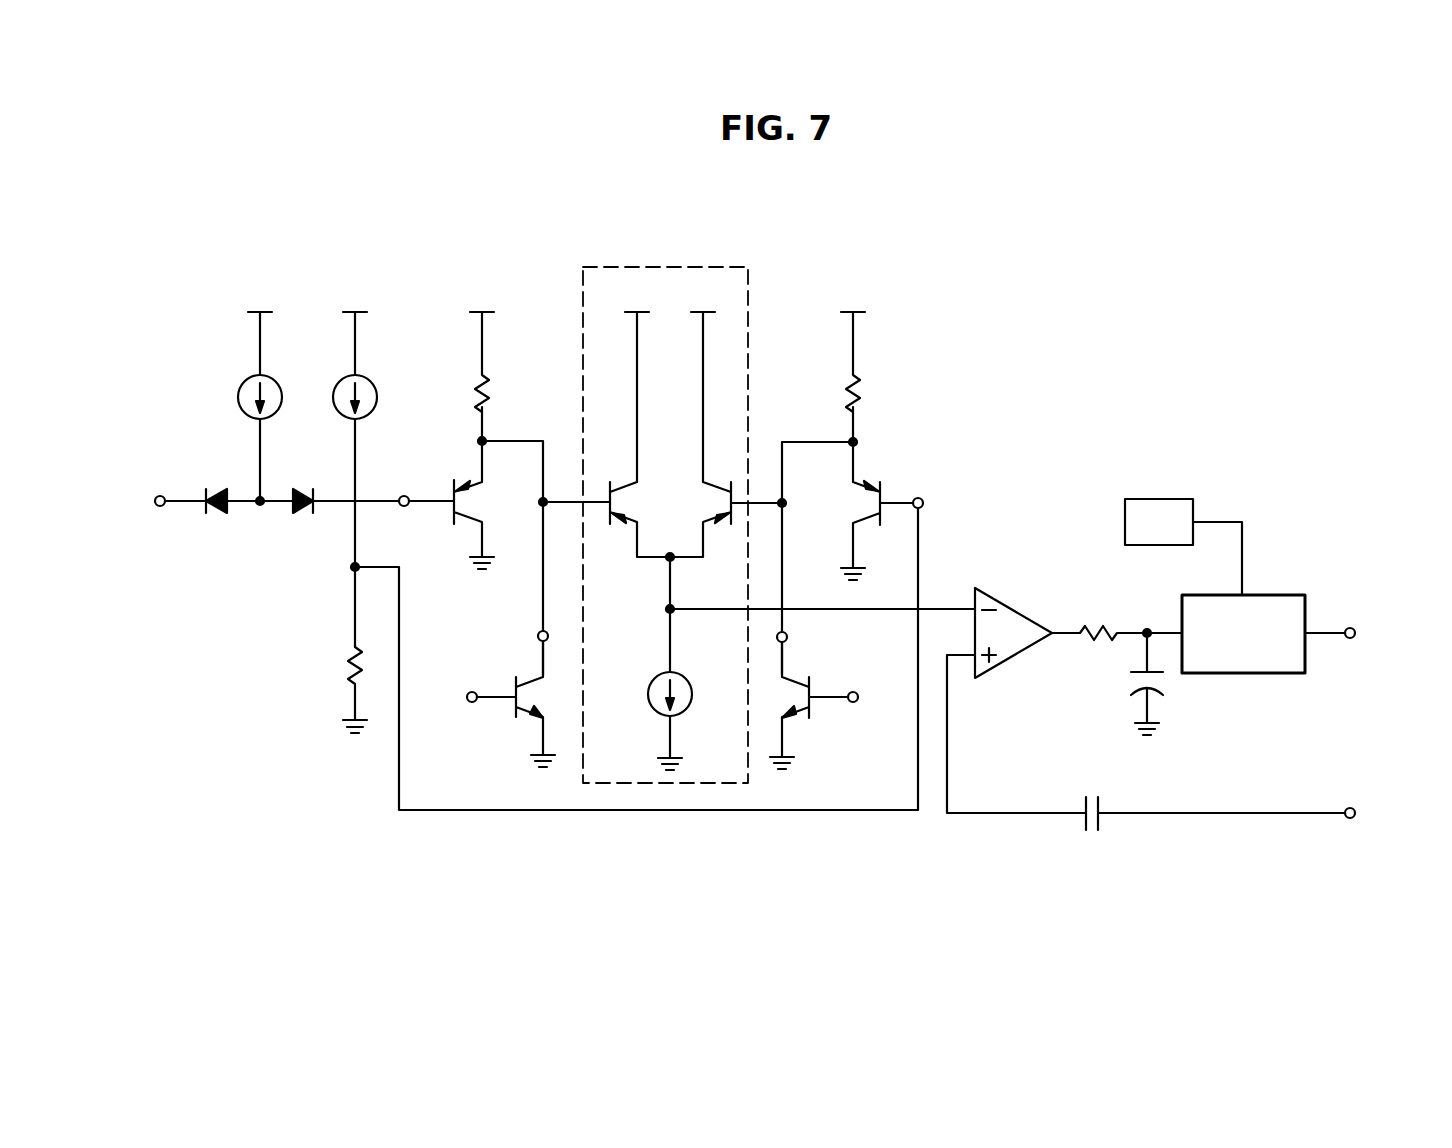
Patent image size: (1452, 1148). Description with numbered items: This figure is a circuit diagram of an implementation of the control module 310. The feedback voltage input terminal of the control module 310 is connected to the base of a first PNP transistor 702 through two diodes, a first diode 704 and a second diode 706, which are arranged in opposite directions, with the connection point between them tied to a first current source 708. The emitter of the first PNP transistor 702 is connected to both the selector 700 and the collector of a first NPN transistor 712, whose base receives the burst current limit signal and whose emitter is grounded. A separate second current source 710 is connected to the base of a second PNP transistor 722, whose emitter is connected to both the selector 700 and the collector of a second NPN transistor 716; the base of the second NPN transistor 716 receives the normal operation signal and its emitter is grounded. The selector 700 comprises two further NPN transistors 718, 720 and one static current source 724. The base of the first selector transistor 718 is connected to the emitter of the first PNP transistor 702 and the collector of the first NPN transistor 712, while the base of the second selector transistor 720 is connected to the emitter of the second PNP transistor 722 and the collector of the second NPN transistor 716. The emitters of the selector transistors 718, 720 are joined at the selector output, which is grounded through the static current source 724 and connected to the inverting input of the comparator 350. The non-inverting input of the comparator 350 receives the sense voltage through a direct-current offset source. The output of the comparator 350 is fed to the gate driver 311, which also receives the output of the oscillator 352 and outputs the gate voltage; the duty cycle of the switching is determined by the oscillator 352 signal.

The control module 310 is at (1092, 297).
The selector 700 is at (667, 267).
The diode D6 704 is at (205, 513).
The diode D7 706 is at (292, 513).
The current source I3 708 is at (240, 380).
The current source I4 710 is at (336, 380).
The transistor Q3 702 is at (450, 513).
The transistor Q4 712 is at (510, 710).
The transistor Q7 718 is at (622, 475).
The transistor Q8 720 is at (693, 487).
The current source I5 724 is at (688, 708).
The transistor Q5 722 is at (840, 523).
The transistor Q6 716 is at (815, 710).
The comparator CP1 350 is at (1015, 608).
The oscillator OSC 352 is at (1162, 499).
The gate driver 311 is at (1272, 595).